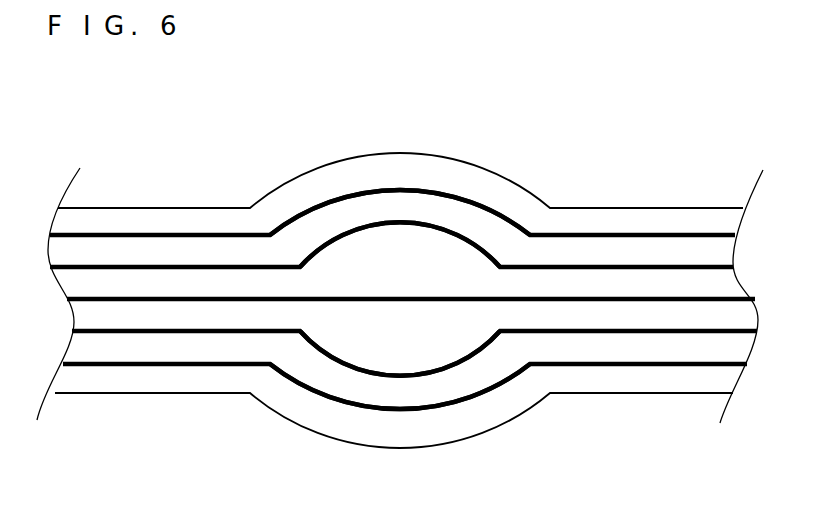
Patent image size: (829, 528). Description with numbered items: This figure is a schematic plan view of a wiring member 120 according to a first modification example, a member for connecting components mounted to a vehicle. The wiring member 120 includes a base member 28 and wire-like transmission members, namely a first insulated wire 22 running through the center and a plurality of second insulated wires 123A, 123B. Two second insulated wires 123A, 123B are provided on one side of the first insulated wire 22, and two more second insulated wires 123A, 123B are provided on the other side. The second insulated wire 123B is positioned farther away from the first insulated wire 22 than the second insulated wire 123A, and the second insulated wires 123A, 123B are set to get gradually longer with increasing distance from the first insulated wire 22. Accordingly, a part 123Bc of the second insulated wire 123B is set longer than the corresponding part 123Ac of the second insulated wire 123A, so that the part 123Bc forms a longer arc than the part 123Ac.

The wiring member 120 is at (412, 290).
The first insulated wire 22 is at (725, 298).
The base member 28 is at (288, 181).
The second insulated wire 123A is at (620, 265).
The second insulated wire 123B is at (680, 233).
The part of the second insulated wire 123Ac is at (470, 244).
The part of the second insulated wire 123Bc is at (363, 192).